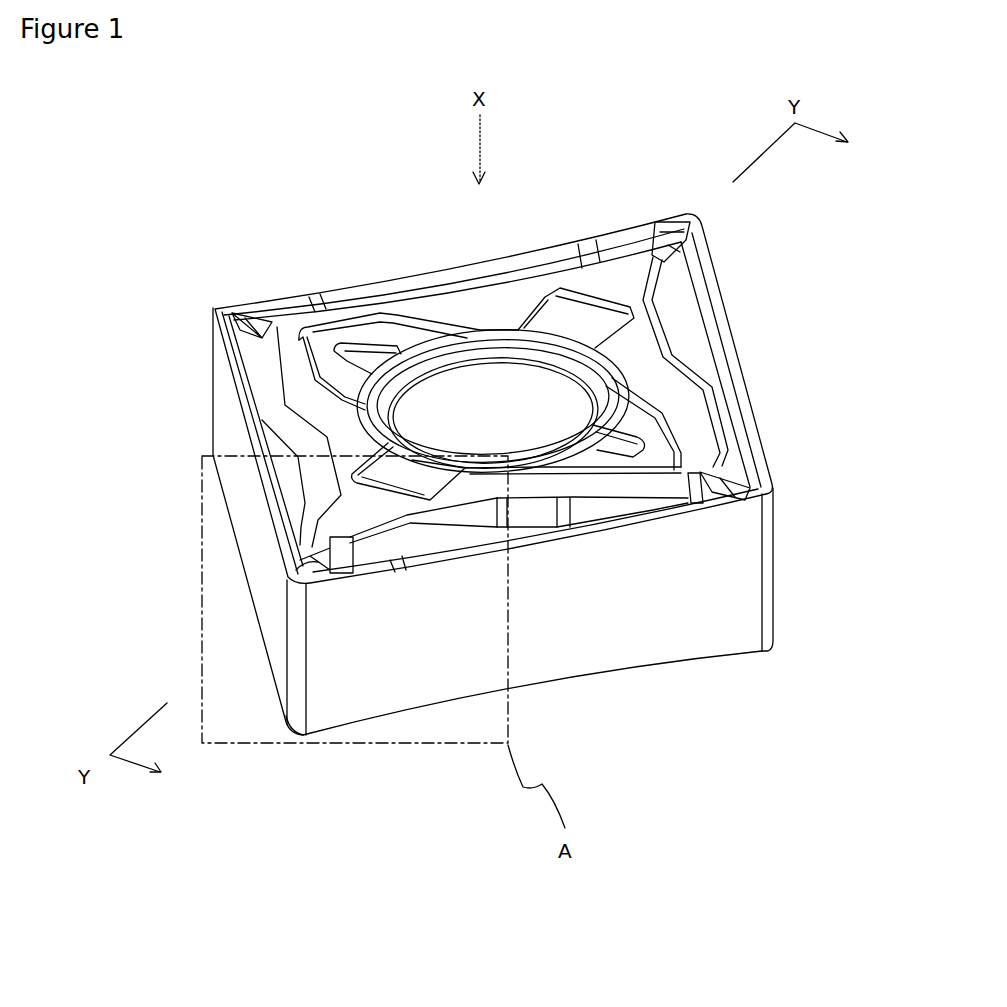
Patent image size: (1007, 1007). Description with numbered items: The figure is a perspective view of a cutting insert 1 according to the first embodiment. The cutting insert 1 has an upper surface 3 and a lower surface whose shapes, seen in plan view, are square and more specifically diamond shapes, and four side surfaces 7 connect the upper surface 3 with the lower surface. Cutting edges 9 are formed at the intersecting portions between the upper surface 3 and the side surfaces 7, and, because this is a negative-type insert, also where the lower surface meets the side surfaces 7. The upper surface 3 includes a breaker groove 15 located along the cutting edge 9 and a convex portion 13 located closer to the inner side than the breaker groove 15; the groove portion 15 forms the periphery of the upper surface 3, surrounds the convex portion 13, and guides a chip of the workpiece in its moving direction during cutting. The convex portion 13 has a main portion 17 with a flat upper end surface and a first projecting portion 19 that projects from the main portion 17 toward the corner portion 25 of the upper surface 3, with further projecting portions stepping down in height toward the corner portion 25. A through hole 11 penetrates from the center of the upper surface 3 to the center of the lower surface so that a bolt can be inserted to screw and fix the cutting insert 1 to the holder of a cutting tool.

The cutting insert 1 is at (325, 190).
The upper surface 3 is at (766, 360).
The side surface 7 is at (648, 610).
The cutting edge 9 is at (263, 503).
The through hole 11 is at (540, 407).
The convex portion 13 is at (479, 397).
The breaker groove 15 is at (737, 433).
The main portion 17 is at (307, 392).
The first projecting portion 19 is at (335, 537).
The corner portion 25 is at (295, 718).